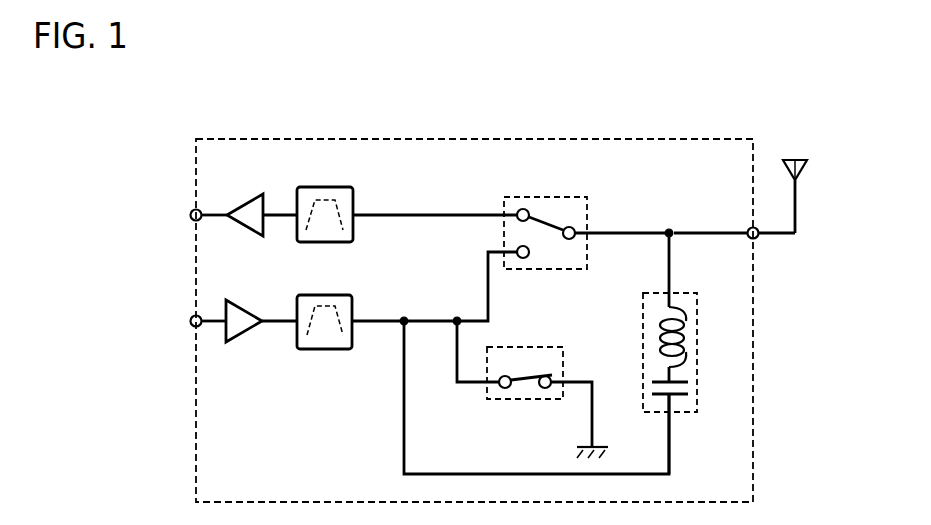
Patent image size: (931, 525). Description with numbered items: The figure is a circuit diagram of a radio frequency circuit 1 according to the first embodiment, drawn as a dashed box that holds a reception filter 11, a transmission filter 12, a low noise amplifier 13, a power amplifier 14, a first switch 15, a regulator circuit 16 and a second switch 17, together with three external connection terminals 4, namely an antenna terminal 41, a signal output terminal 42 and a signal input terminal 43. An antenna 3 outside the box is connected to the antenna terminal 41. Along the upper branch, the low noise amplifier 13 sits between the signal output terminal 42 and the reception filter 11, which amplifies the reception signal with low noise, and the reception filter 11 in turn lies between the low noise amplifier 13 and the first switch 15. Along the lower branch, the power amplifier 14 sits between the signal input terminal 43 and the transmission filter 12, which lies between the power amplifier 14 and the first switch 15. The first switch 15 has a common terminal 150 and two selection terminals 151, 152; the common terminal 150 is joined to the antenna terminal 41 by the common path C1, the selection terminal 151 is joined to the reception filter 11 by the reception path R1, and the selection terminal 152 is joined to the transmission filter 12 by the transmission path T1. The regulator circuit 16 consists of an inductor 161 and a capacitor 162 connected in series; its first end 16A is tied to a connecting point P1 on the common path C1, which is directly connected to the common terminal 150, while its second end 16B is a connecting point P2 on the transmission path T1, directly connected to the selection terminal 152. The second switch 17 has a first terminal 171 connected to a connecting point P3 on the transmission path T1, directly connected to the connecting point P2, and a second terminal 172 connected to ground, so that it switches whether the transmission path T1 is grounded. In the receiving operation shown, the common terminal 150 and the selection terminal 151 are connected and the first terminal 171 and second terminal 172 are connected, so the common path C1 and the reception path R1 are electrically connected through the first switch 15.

The radio frequency circuit 1 is at (731, 138).
The antenna 3 is at (803, 168).
The external connection terminals 4 is at (466, 266).
The reception filter 11 is at (325, 192).
The transmission filter 12 is at (323, 352).
The low noise amplifier 13 is at (248, 200).
The power amplifier 14 is at (242, 335).
The first switch 15 is at (573, 232).
The regulator circuit 16 is at (666, 352).
The second switch 17 is at (540, 387).
The antenna terminal 41 is at (758, 238).
The signal output terminal 42 is at (189, 213).
The signal input terminal 43 is at (189, 320).
The common terminal 150 is at (575, 238).
The selection terminal 151 is at (521, 208).
The selection terminal 152 is at (524, 258).
The inductor 161 is at (681, 326).
The capacitor 162 is at (688, 388).
The first terminal 171 is at (503, 393).
The second terminal 172 is at (547, 393).
The first end 16A is at (673, 290).
The second end 16B is at (670, 413).
The common path C1 is at (625, 230).
The connecting point P1 is at (672, 229).
The connecting point P2 is at (403, 318).
The connecting point P3 is at (458, 318).
The reception path R1 is at (424, 212).
The transmission path T1 is at (373, 325).